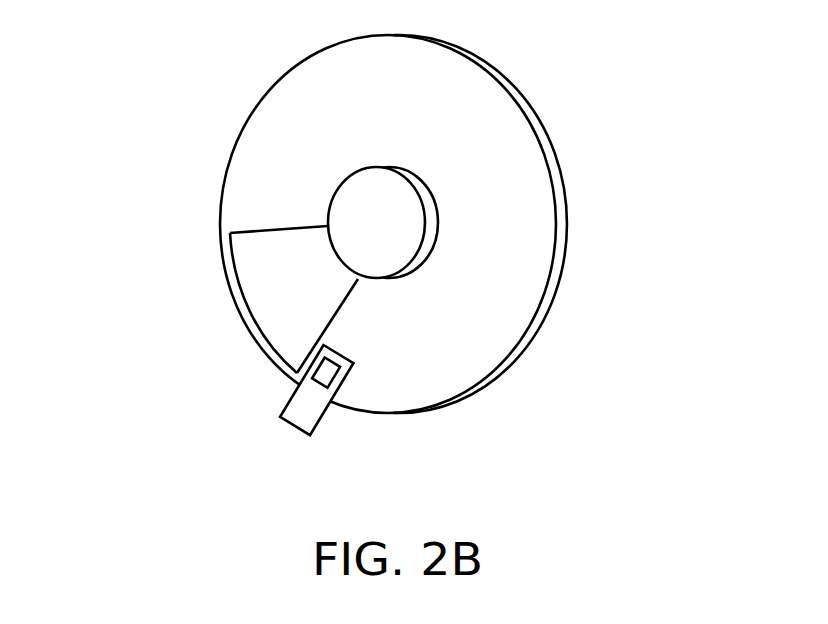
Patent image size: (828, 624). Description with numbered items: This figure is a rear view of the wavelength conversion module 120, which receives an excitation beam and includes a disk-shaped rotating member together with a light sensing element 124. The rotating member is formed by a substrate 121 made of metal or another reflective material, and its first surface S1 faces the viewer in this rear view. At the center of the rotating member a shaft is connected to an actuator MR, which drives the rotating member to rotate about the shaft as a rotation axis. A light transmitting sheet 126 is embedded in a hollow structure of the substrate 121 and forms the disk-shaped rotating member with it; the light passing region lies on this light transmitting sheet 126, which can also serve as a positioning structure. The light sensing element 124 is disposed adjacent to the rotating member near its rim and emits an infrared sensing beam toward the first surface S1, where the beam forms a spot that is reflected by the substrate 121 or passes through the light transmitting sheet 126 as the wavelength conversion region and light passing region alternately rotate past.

The wavelength conversion module 120 is at (370, 253).
The substrate 121 is at (260, 168).
The light sensing element 124 is at (303, 408).
The light transmitting sheet 126 is at (276, 299).
The actuator MR is at (400, 225).
The first surface S1 is at (453, 127).